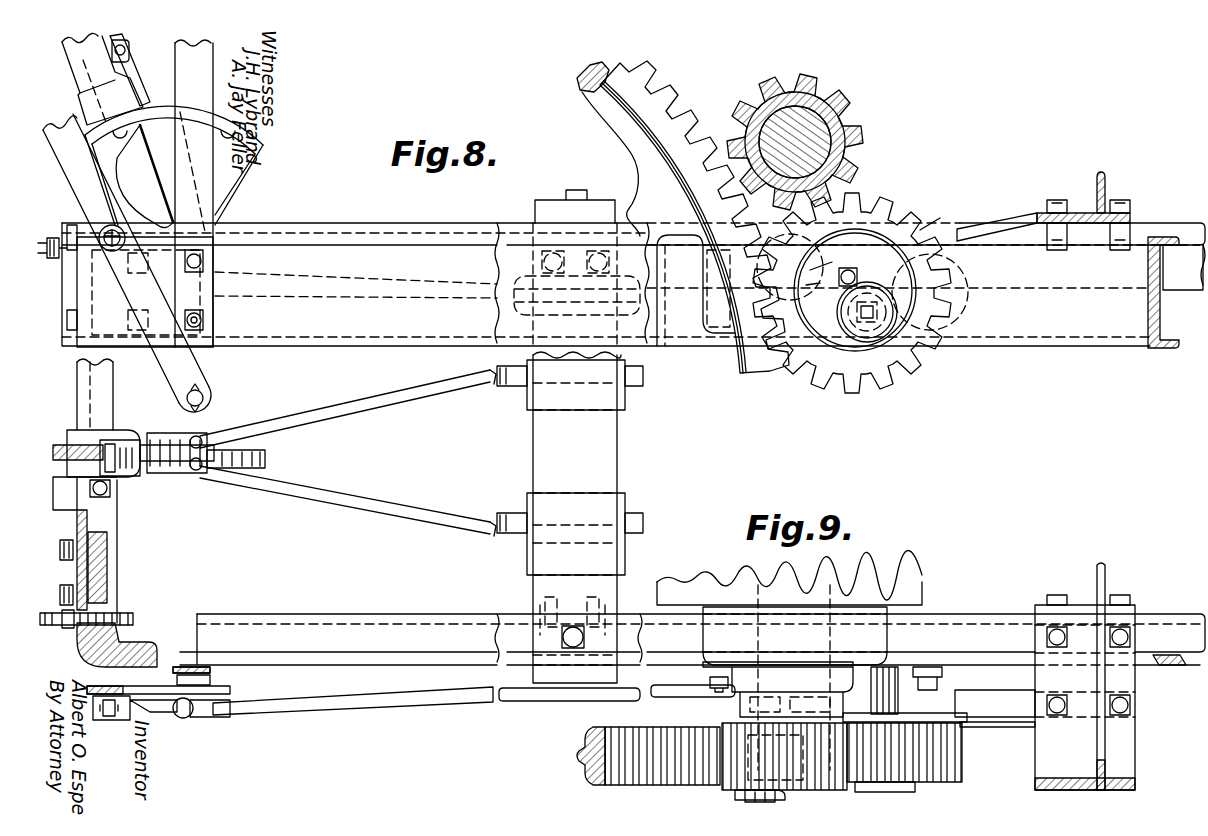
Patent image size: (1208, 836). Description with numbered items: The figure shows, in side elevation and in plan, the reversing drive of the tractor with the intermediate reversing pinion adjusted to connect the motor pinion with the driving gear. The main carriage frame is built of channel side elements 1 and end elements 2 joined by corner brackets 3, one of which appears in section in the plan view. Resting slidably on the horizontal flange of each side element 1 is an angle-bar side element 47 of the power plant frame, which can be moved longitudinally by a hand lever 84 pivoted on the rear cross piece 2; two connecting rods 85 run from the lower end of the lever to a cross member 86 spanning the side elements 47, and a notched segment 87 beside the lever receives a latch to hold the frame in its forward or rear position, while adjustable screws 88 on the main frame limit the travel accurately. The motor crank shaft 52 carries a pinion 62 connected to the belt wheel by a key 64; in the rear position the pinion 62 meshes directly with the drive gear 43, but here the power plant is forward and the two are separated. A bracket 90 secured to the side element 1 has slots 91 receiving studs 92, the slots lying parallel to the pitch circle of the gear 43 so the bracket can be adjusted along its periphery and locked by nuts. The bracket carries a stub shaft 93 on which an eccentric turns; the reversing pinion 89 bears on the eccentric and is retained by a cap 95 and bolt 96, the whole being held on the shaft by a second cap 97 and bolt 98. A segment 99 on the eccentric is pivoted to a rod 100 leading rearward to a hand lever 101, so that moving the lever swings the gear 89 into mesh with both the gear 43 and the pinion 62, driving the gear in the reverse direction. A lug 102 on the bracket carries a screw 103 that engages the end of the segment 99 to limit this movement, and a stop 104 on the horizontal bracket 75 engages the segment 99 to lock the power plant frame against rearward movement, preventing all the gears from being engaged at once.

In FIG. 8, the side element 1 is at (342, 338).
In FIG. 9, the side element 1 is at (332, 658).
In FIG. 9, the end element 2 is at (78, 520).
In FIG. 8, the corner bracket 3 is at (80, 338).
In FIG. 9, the corner bracket 3 is at (82, 643).
In FIG. 8, the drive gear 43 is at (666, 104).
In FIG. 9, the drive gear 43 is at (632, 730).
In FIG. 8, the side element 47 is at (355, 228).
In FIG. 9, the side element 47 is at (353, 617).
In FIG. 8, the crank shaft 52 is at (855, 145).
In FIG. 9, the crank shaft 52 is at (767, 799).
In FIG. 8, the pinion 62 is at (853, 104).
In FIG. 9, the pinion 62 is at (745, 738).
In FIG. 8, the key 64 is at (760, 125).
In FIG. 8, the horizontal bracket 75 is at (1110, 186).
In FIG. 9, the horizontal bracket 75 is at (1052, 753).
In FIG. 8, the hand lever 84 is at (80, 63).
In FIG. 9, the hand lever 84 is at (57, 440).
In FIG. 8, the connecting rod 85 is at (385, 285).
In FIG. 9, the connecting rod 85 is at (410, 397).
In FIG. 8, the cross member 86 is at (548, 210).
In FIG. 9, the cross member 86 is at (543, 465).
In FIG. 8, the segment 87 is at (268, 150).
In FIG. 9, the segment 87 is at (262, 463).
In FIG. 8, the screw 88 is at (62, 265).
In FIG. 9, the screw 88 is at (123, 618).
In FIG. 8, the reversing pinion 89 is at (893, 383).
In FIG. 9, the reversing pinion 89 is at (960, 760).
In FIG. 8, the bracket 90 is at (714, 307).
In FIG. 9, the bracket 90 is at (925, 668).
In FIG. 8, the slot 91 is at (708, 340).
In FIG. 8, the stud 92 is at (950, 315).
In FIG. 9, the stud 92 is at (942, 690).
In FIG. 9, the stub shaft 93 is at (870, 692).
In FIG. 8, the cap 95 is at (836, 230).
In FIG. 9, the cap 95 is at (955, 782).
In FIG. 8, the bolt 96 is at (858, 275).
In FIG. 8, the second cap 97 is at (878, 298).
In FIG. 9, the second cap 97 is at (900, 782).
In FIG. 8, the bolt 98 is at (861, 312).
In FIG. 9, the bolt 98 is at (880, 785).
In FIG. 8, the segment 99 is at (925, 228).
In FIG. 9, the segment 99 is at (910, 717).
In FIG. 8, the rod 100 is at (450, 233).
In FIG. 9, the rod 100 is at (364, 700).
In FIG. 8, the hand lever 101 is at (94, 187).
In FIG. 9, the hand lever 101 is at (105, 686).
In FIG. 8, the lug 102 is at (818, 280).
In FIG. 8, the screw 103 is at (831, 261).
In FIG. 8, the stop 104 is at (1002, 232).
In FIG. 9, the stop 104 is at (992, 708).